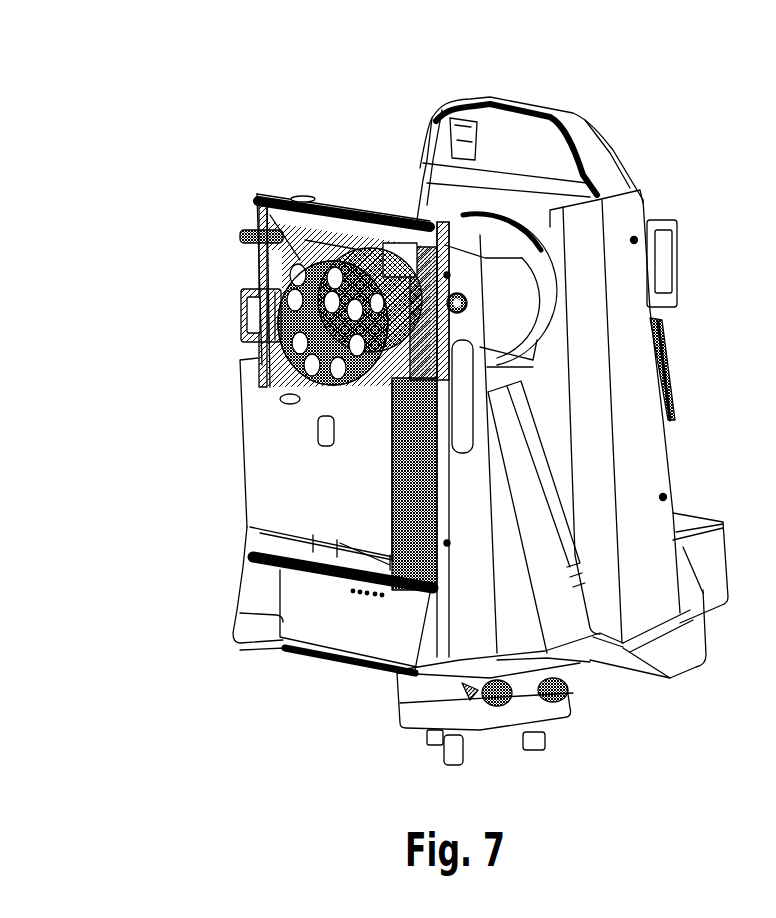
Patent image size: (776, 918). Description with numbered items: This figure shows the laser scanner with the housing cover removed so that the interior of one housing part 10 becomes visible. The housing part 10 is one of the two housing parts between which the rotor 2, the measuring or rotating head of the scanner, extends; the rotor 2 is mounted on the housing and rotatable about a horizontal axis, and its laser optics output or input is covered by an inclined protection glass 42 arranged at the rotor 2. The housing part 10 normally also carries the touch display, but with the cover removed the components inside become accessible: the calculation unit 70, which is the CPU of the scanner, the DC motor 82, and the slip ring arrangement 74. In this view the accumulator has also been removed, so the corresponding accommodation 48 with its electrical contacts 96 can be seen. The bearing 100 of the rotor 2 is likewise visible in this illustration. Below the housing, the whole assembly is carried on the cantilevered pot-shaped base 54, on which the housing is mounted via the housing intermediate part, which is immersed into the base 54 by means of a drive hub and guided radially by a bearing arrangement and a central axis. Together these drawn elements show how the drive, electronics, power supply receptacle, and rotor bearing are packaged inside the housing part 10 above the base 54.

The rotor 2 is at (505, 218).
The housing part 10 is at (330, 200).
The inclined protection glass 42 is at (510, 293).
The accommodation 48 is at (260, 623).
The pot-shaped base 54 is at (553, 710).
The calculation unit 70 is at (237, 425).
The slip ring arrangement 74 is at (288, 323).
The DC motor 82 is at (363, 220).
The electrical contacts 96 is at (352, 594).
The bearing 100 is at (415, 218).